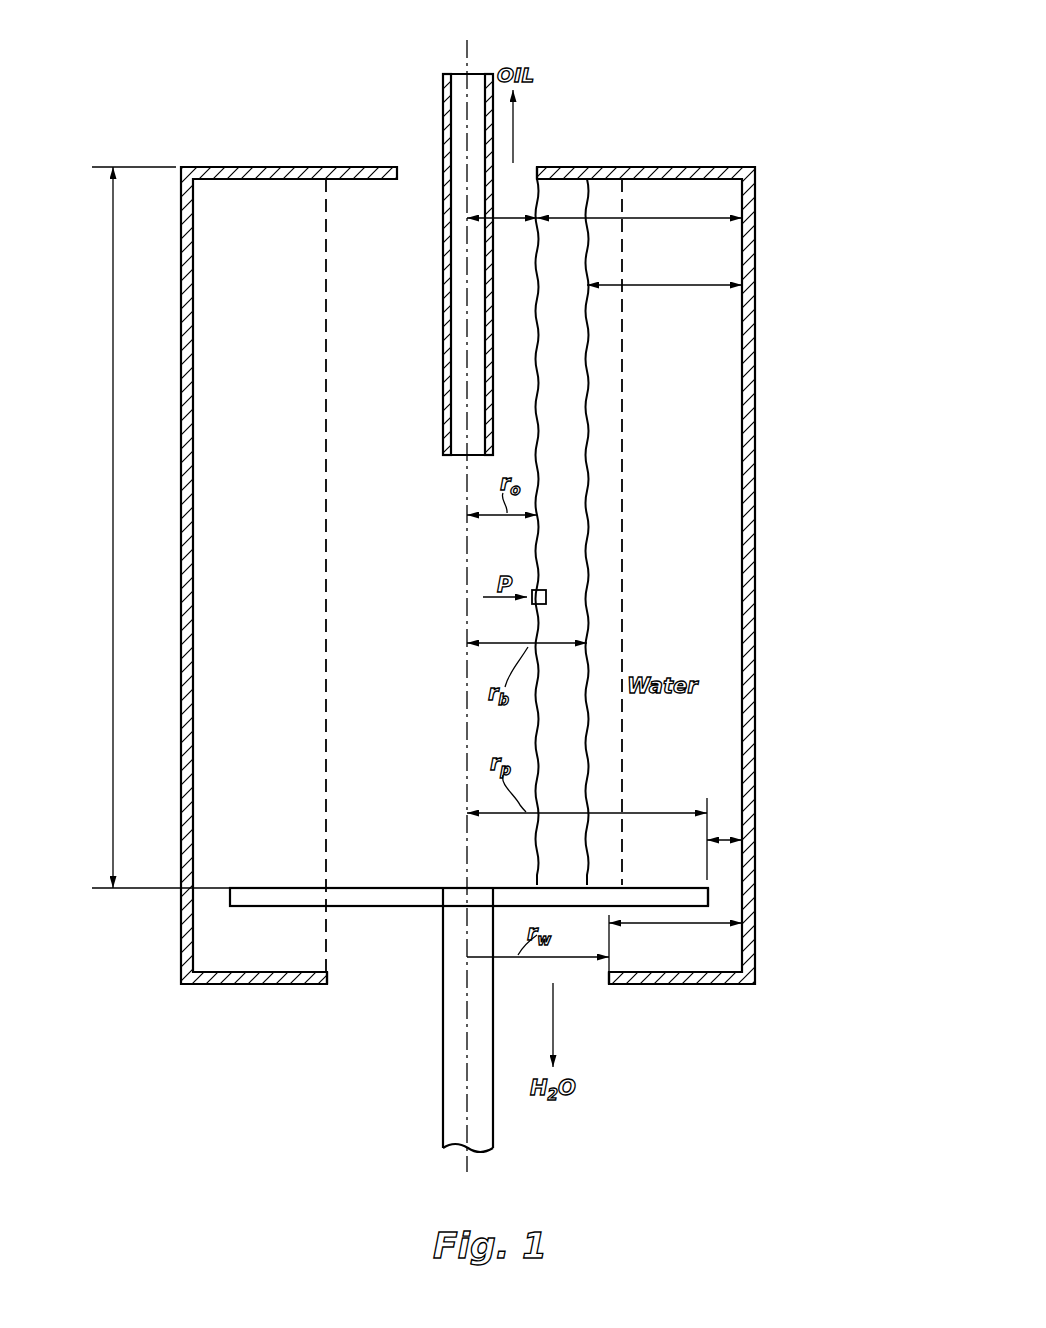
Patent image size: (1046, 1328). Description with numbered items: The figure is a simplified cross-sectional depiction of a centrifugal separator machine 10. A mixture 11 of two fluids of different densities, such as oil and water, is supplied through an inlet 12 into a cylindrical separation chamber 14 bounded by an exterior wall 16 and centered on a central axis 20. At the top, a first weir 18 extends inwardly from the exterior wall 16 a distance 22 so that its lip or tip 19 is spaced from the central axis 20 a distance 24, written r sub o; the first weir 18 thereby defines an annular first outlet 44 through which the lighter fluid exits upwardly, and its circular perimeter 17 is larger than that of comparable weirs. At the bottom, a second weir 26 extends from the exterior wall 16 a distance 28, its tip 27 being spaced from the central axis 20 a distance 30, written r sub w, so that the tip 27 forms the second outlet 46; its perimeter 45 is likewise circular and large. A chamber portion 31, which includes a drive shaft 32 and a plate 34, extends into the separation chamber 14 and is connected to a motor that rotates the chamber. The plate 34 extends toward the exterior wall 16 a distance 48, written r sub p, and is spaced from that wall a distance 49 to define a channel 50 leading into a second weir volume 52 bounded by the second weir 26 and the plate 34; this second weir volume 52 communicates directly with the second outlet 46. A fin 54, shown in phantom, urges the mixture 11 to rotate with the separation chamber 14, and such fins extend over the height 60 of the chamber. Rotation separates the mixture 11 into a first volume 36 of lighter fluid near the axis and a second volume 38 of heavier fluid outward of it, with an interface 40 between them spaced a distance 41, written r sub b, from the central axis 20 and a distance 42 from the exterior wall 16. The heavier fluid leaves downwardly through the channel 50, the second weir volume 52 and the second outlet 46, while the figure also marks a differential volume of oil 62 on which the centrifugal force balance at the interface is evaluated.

The machine 10 is at (557, 542).
The mixture 11 is at (457, 86).
The inlet 12 is at (442, 137).
The separation chamber 14 is at (393, 614).
The exterior wall 16 is at (522, 542).
The perimeter of the first weir 17 is at (403, 170).
The first weir 18 is at (652, 166).
The tip of the first weir 19 is at (563, 166).
The central axis 20 is at (467, 718).
The distance 22 is at (630, 221).
The distance 24 is at (503, 221).
The second weir 26 is at (670, 985).
The tip of the second weir 27 is at (615, 985).
The distance 28 is at (680, 926).
The distance 30 is at (538, 960).
The chamber portion 31 is at (455, 878).
The drive shaft 32 is at (443, 1078).
The plate 34 is at (365, 887).
The first volume 36 is at (533, 362).
The second volume 38 is at (688, 362).
The interface 40 is at (590, 458).
The distance 41 is at (550, 641).
The distance 42 is at (655, 288).
The first outlet 44 is at (527, 165).
The perimeter of the second weir 45 is at (327, 977).
The second outlet 46 is at (380, 975).
The distance 48 is at (635, 812).
The distance 49 is at (728, 835).
The channel 50 is at (722, 897).
The second weir volume 52 is at (675, 948).
The fin 54 is at (326, 425).
The height 60 is at (80, 500).
The differential volume of oil 62 is at (548, 592).